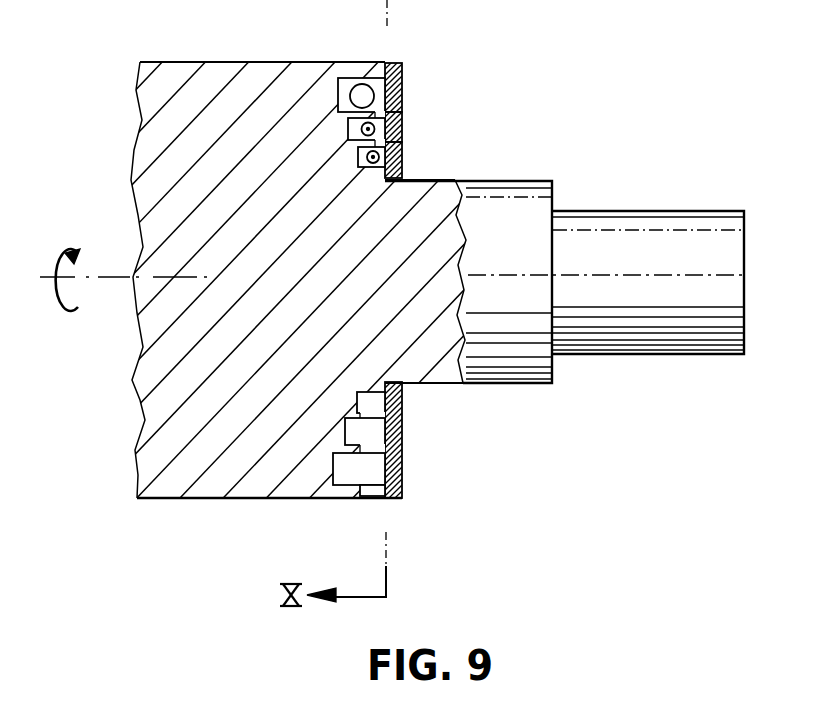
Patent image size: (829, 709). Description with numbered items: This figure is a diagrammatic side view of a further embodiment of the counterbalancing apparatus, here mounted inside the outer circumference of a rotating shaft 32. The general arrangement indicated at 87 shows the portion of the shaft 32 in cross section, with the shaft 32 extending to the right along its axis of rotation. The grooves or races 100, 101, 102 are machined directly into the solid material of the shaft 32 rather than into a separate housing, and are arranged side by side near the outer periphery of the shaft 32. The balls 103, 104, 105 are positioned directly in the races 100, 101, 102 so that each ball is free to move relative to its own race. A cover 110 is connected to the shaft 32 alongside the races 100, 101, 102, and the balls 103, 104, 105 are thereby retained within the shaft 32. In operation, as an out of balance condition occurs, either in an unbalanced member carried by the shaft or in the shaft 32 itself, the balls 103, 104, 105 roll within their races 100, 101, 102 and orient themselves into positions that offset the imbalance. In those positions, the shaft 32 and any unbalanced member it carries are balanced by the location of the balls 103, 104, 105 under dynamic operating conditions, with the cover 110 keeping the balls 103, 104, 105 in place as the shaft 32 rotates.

The seal assembly 87 is at (189, 46).
The rotating shaft 32 is at (228, 500).
The groove or race 100 is at (402, 100).
The groove or race 101 is at (402, 129).
The groove or race 102 is at (402, 158).
The ball 103 is at (360, 85).
The ball 104 is at (348, 133).
The ball 105 is at (358, 160).
The cover 110 is at (402, 458).